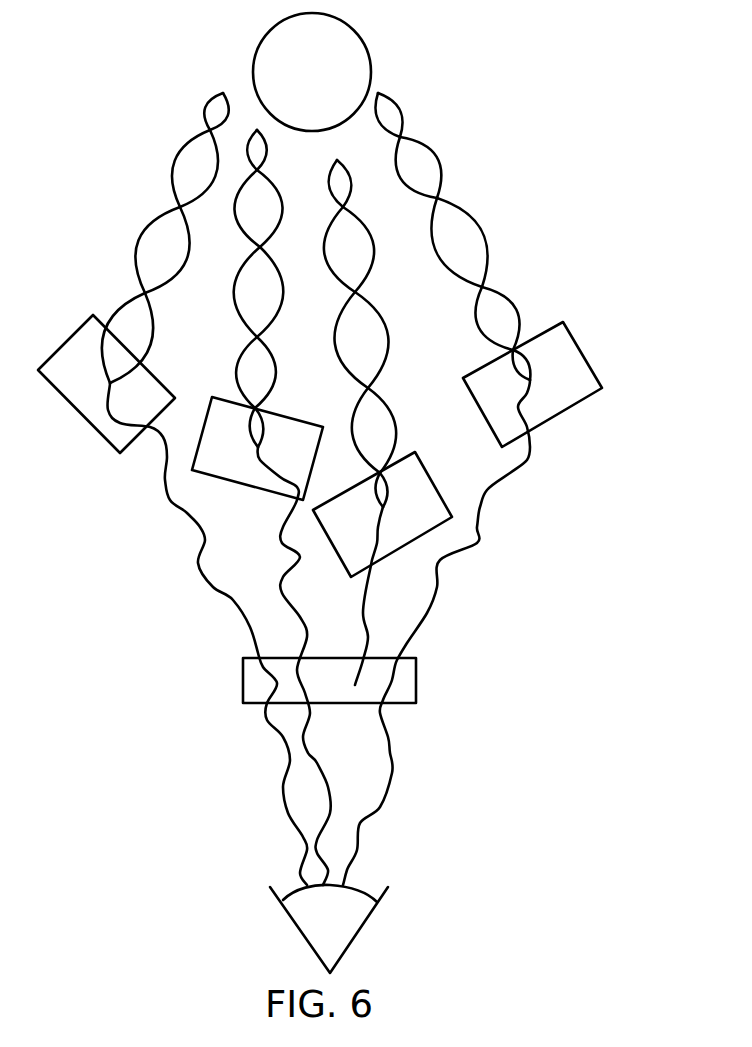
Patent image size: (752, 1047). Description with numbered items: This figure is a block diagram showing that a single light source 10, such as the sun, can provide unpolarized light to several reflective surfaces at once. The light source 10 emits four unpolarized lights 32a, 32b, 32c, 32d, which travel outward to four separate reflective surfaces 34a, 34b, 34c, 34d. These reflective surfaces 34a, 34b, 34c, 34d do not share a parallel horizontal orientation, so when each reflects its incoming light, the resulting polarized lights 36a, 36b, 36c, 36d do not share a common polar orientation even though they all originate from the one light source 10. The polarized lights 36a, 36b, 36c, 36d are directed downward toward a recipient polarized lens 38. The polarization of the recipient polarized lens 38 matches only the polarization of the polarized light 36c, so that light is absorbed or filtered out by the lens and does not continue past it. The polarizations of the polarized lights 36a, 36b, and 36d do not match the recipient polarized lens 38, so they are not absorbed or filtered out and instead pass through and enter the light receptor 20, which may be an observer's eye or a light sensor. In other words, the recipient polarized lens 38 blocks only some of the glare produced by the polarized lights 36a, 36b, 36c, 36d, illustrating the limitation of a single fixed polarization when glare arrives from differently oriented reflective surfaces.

The light source 10 is at (370, 50).
The light receptor 20 is at (377, 910).
The unpolarized light 32a is at (173, 169).
The unpolarized light 32b is at (247, 345).
The unpolarized light 32c is at (400, 303).
The unpolarized light 32d is at (432, 231).
The reflective surface 34a is at (77, 330).
The reflective surface 34b is at (213, 396).
The reflective surface 34c is at (416, 452).
The reflective surface 34d is at (482, 367).
The polarized light 36a is at (167, 503).
The polarized light 36b is at (299, 557).
The polarized light 36c is at (364, 639).
The polarized light 36d is at (481, 505).
The recipient polarized lens 38 is at (417, 676).